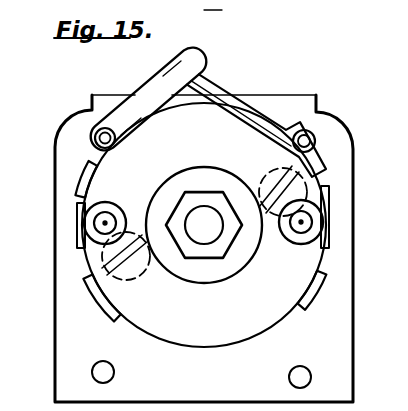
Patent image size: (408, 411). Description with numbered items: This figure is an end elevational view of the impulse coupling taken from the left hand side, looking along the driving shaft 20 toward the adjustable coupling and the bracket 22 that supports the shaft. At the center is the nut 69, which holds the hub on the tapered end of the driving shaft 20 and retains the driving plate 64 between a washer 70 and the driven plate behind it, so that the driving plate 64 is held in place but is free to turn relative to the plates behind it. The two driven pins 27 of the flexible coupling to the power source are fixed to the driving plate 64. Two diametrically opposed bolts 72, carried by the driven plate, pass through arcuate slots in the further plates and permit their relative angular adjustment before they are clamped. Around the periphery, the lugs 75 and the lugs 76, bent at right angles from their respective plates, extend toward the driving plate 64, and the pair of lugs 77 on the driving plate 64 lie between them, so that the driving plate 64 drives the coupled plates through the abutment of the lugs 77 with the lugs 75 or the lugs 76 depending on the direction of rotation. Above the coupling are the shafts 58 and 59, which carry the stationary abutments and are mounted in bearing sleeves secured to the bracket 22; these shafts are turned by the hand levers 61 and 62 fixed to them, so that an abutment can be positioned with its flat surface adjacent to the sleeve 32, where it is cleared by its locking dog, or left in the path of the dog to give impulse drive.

The driving shaft 20 is at (204, 225).
The bracket 22 is at (204, 248).
The driven pins 27 is at (203, 230).
The sleeve 32 is at (238, 8).
The shaft 58 is at (315, 140).
The shaft 59 is at (95, 138).
The hand lever 61 is at (237, 92).
The hand lever 62 is at (156, 82).
The driving plate 64 is at (204, 225).
The nut 69 is at (218, 250).
The washer 70 is at (198, 266).
The bolts 72 is at (330, 190).
The lugs 75 is at (320, 166).
The lugs 76 is at (86, 173).
The lugs 77 is at (100, 220).